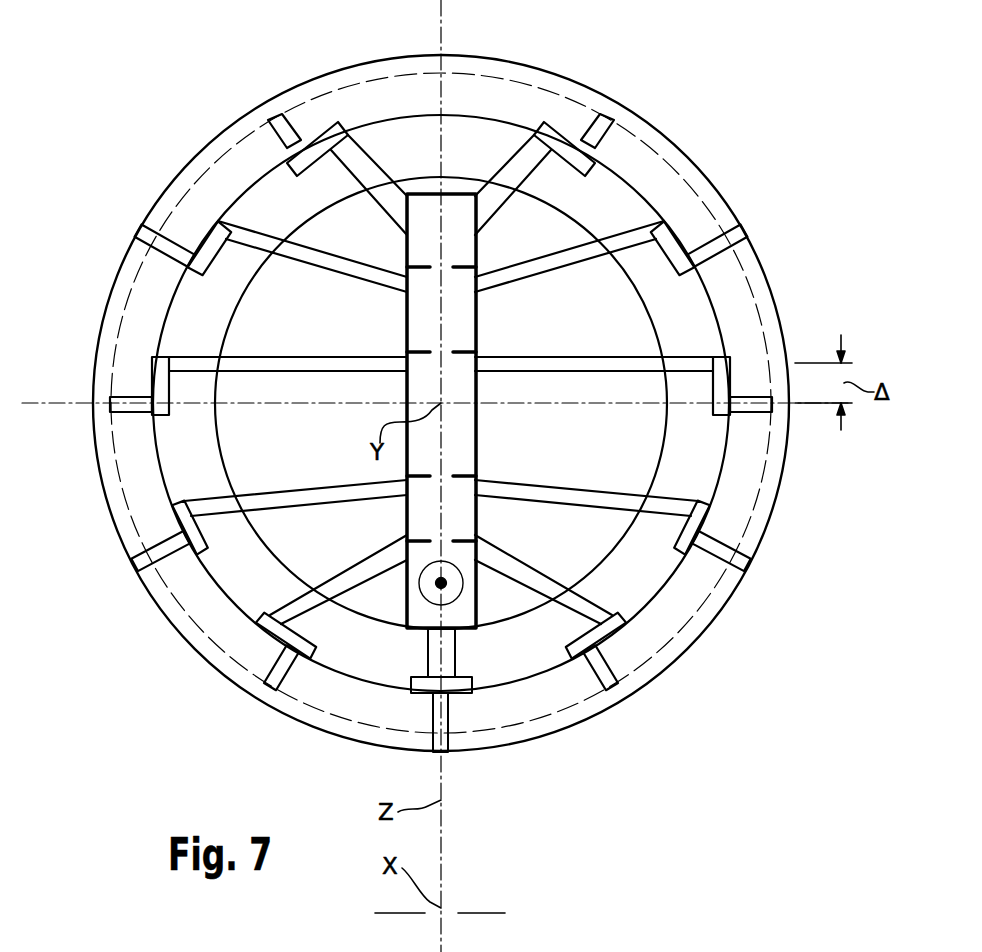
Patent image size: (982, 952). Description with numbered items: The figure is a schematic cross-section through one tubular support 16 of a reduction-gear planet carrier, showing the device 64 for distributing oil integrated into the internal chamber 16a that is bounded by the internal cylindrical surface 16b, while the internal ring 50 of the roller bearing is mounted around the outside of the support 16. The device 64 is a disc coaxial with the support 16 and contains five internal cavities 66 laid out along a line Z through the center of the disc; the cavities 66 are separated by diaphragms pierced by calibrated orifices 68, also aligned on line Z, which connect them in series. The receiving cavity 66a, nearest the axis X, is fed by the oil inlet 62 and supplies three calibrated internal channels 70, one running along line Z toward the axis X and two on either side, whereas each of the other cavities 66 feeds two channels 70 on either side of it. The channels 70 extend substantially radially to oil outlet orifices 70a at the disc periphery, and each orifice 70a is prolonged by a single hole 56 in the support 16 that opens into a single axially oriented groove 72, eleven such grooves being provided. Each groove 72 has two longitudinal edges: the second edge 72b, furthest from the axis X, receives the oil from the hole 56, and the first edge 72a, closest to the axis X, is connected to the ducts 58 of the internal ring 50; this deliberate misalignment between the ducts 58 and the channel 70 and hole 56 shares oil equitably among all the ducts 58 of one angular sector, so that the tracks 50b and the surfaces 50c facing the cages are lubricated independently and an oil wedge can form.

The tubular support 16 is at (600, 530).
The internal chamber 16a is at (662, 570).
The internal cylindrical surface 16b is at (714, 621).
The internal ring 50 is at (750, 150).
The tracks 50b is at (213, 165).
The surfaces 50c is at (175, 183).
The hole 56 is at (522, 172).
The ducts 58 is at (612, 122).
The oil inlet 62 is at (447, 587).
The device for distributing oil 64 is at (672, 449).
The internal cavities 66 is at (458, 287).
The receiving cavity 66a is at (417, 620).
The calibrated orifices 68 is at (437, 272).
The calibrated internal channels 70 is at (390, 205).
The oil outlet orifices 70a is at (636, 190).
The grooves 72 is at (316, 133).
The first longitudinal edge 72a is at (442, 404).
The second longitudinal edge 72b is at (398, 378).